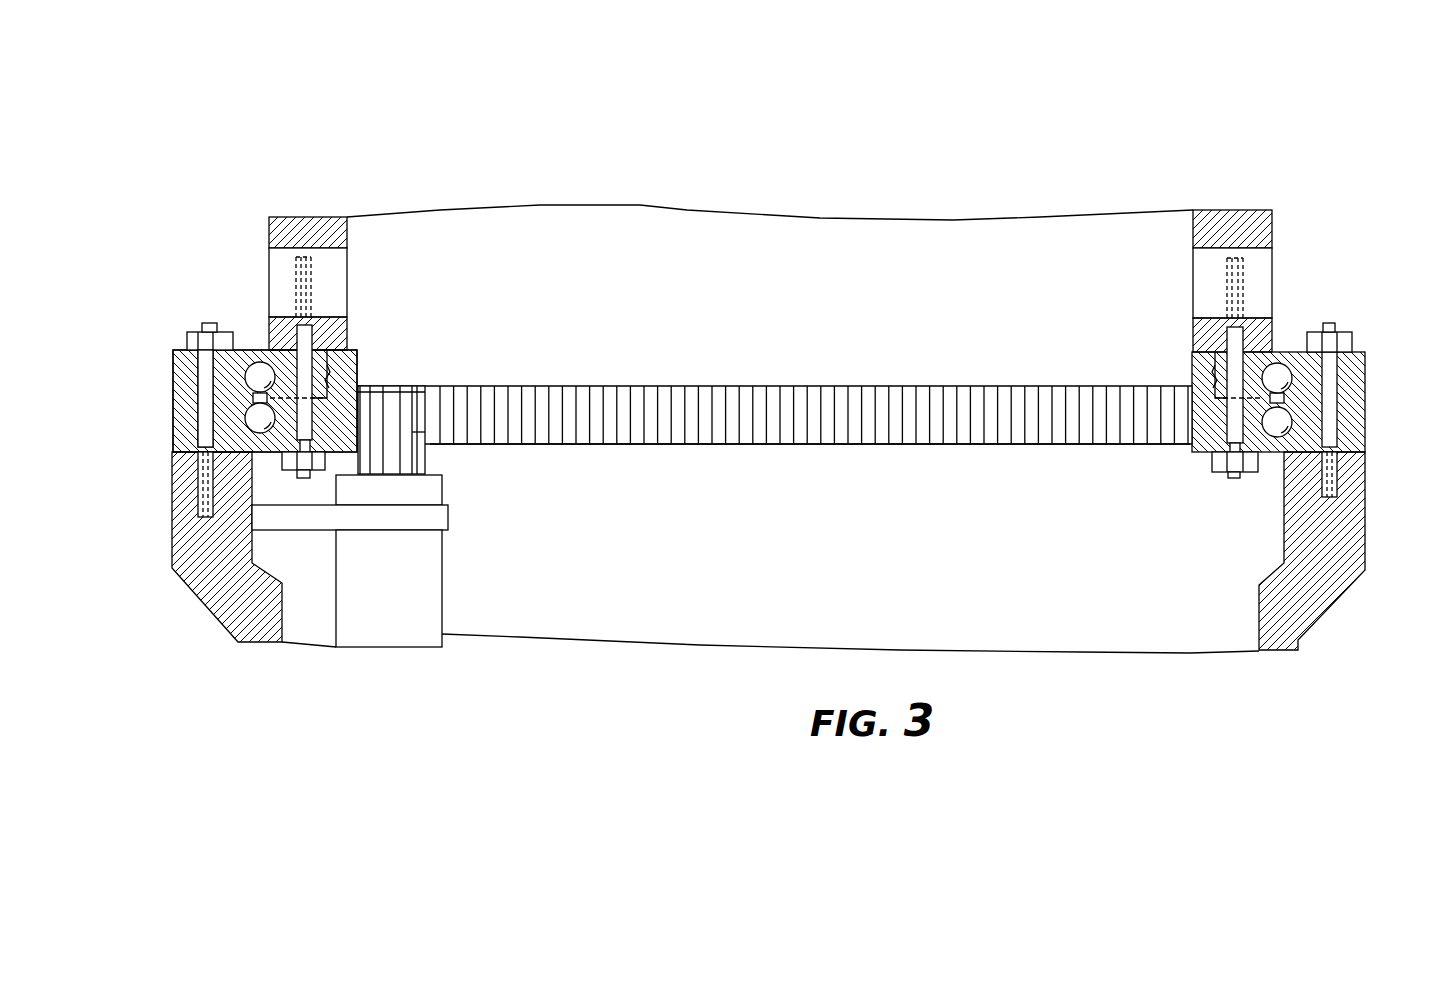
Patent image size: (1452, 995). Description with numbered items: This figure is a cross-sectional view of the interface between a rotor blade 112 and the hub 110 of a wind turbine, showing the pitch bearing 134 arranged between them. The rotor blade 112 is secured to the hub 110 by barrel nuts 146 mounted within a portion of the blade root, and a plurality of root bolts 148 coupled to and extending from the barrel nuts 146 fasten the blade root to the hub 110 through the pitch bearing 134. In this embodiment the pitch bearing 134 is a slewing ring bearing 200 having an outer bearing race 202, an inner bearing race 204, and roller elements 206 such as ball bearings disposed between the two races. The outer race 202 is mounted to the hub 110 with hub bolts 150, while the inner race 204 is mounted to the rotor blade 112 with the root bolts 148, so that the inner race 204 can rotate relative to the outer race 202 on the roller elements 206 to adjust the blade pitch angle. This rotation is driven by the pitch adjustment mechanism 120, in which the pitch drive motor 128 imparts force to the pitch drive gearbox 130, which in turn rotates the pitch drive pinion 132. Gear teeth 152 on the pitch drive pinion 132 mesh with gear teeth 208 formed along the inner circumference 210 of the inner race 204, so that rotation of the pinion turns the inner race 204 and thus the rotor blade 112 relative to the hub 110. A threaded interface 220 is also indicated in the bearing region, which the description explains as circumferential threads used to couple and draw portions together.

The hub 110 is at (213, 612).
The rotor blade 112 is at (1272, 222).
The pitch adjustment mechanism 120 is at (378, 589).
The pitch drive motor 128 is at (362, 637).
The pitch drive gearbox 130 is at (430, 492).
The pitch drive pinion 132 is at (432, 462).
The pitch bearing 134 is at (158, 368).
The barrel nuts 146 is at (269, 263).
The root bolts 148 is at (268, 352).
The hub bolts 150 is at (205, 367).
The gear teeth 152 is at (425, 435).
The slewing ring bearing 200 is at (219, 346).
The outer bearing race 202 is at (178, 417).
The inner bearing race 204 is at (337, 368).
The roller elements 206 is at (1295, 418).
The gear teeth 208 is at (673, 420).
The inner circumference 210 is at (887, 447).
The threaded interface 220 is at (330, 370).